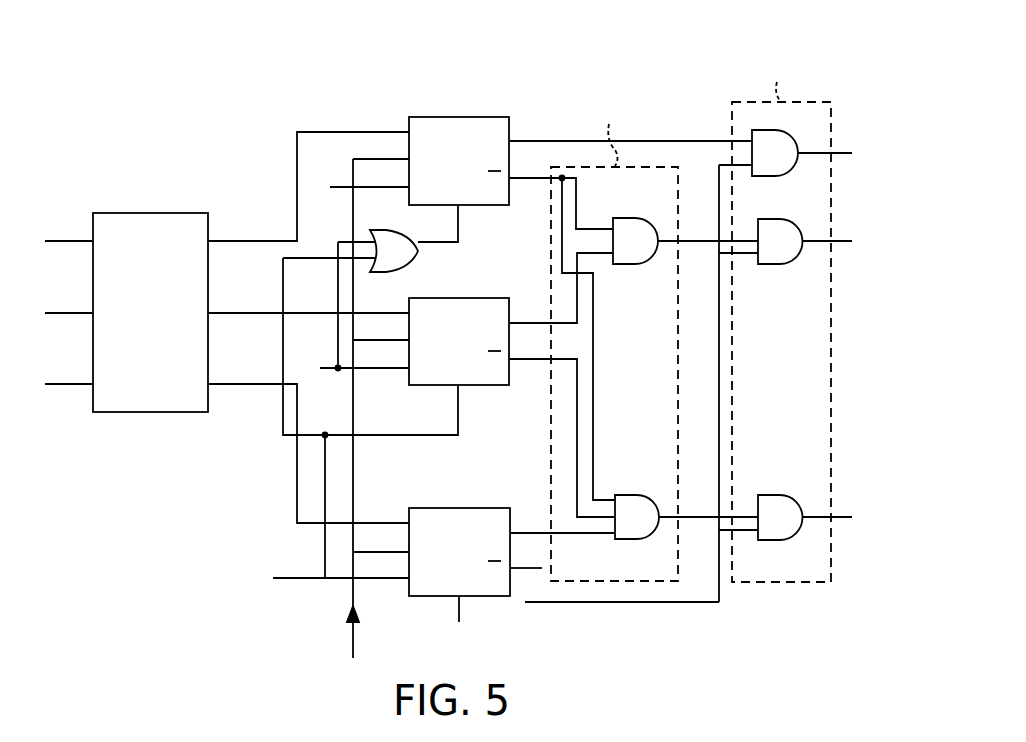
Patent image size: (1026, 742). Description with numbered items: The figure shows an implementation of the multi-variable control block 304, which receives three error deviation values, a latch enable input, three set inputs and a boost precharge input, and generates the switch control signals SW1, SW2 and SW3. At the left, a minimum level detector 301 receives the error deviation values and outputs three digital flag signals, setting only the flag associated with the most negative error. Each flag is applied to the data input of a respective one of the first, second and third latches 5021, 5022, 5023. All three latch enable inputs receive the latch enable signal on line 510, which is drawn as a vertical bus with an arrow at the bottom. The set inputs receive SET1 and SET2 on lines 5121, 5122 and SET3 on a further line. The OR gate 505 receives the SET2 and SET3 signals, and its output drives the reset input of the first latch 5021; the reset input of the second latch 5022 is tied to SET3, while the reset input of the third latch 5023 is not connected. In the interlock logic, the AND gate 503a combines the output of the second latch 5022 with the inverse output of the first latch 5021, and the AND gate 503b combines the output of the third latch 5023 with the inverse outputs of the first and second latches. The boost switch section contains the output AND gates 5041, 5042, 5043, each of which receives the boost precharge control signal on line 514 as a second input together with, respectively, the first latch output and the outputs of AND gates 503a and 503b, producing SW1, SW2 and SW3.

The multi-variable control block 304 is at (907, 50).
The minimum level detector (MIN LEV) 301 is at (150, 212).
The first latch 5021 is at (506, 116).
The second latch 5022 is at (506, 297).
The third latch 5023 is at (506, 507).
The set input line SET1 5121 is at (332, 185).
The set input line SET2 5122 is at (330, 366).
The OR gate 505 is at (380, 273).
The latch enable line 510 is at (352, 600).
The AND gate 503a is at (628, 217).
The AND gate 503b is at (627, 494).
The output AND gate 5041 is at (785, 177).
The output AND gate 5042 is at (770, 265).
The output AND gate 5043 is at (771, 494).
The boost precharge control signal line 514 is at (719, 603).